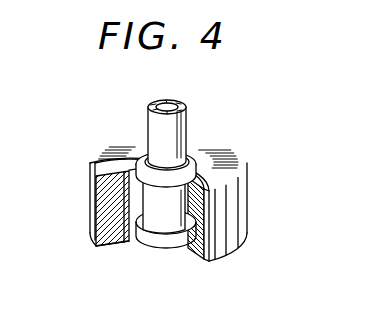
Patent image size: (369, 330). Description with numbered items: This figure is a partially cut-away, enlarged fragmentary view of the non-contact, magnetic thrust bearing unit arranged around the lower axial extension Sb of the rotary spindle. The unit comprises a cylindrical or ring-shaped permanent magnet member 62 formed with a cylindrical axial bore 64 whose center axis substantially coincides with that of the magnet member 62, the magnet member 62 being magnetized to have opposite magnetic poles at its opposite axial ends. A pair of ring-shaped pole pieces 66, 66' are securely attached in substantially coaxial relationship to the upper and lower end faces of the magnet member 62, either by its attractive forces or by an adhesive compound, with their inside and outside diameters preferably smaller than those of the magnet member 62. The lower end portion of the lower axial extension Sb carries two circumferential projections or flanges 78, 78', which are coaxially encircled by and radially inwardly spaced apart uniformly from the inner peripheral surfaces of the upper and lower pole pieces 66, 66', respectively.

The lower axial extension Sb is at (186, 125).
The circumferential projection or flange 78 is at (134, 170).
The circumferential projection or flange 78' is at (166, 251).
The permanent magnet member 62 is at (247, 209).
The upper pole piece 66 is at (195, 193).
The lower pole piece 66' is at (107, 267).
The cylindrical axial bore 64 is at (97, 200).